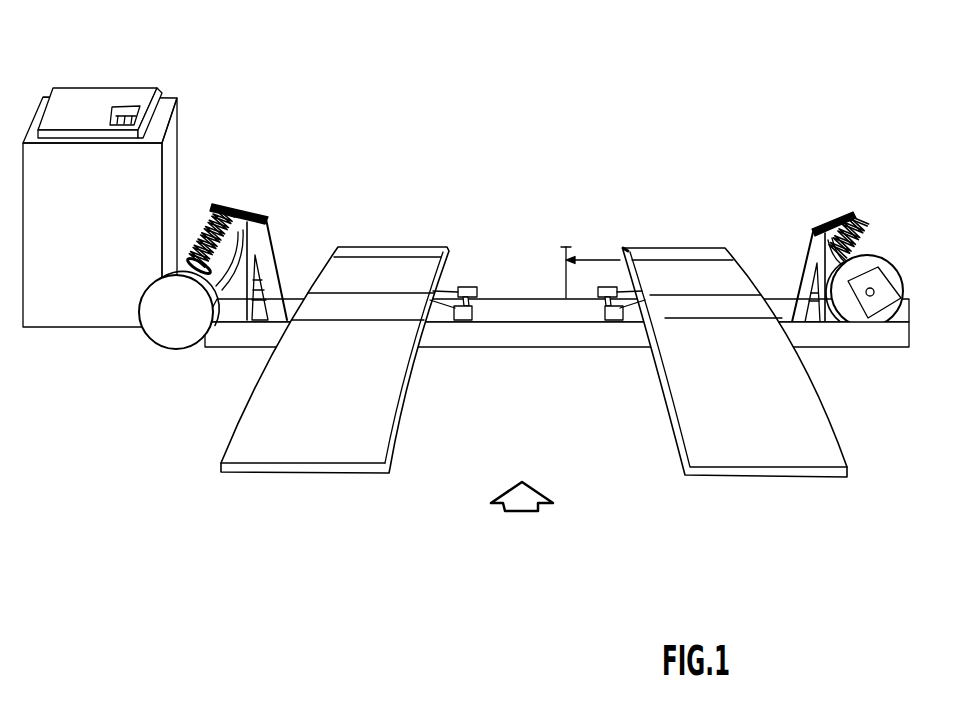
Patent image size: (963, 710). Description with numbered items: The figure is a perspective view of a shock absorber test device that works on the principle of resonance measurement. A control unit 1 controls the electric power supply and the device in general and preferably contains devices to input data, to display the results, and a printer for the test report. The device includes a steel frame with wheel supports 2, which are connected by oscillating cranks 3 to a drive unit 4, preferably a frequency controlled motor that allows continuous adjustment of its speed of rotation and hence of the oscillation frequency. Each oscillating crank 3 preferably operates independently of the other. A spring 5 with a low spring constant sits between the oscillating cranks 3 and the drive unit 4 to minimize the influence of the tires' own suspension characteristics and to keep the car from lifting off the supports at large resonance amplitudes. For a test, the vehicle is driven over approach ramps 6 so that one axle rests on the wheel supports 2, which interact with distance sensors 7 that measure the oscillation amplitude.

The control unit 1 is at (88, 102).
The wheel supports 2 is at (370, 290).
The oscillating cranks 3 is at (273, 220).
The drive unit 4 is at (167, 332).
The spring 5 is at (867, 240).
The approach ramps 6 is at (383, 415).
The distance sensors 7 is at (556, 268).